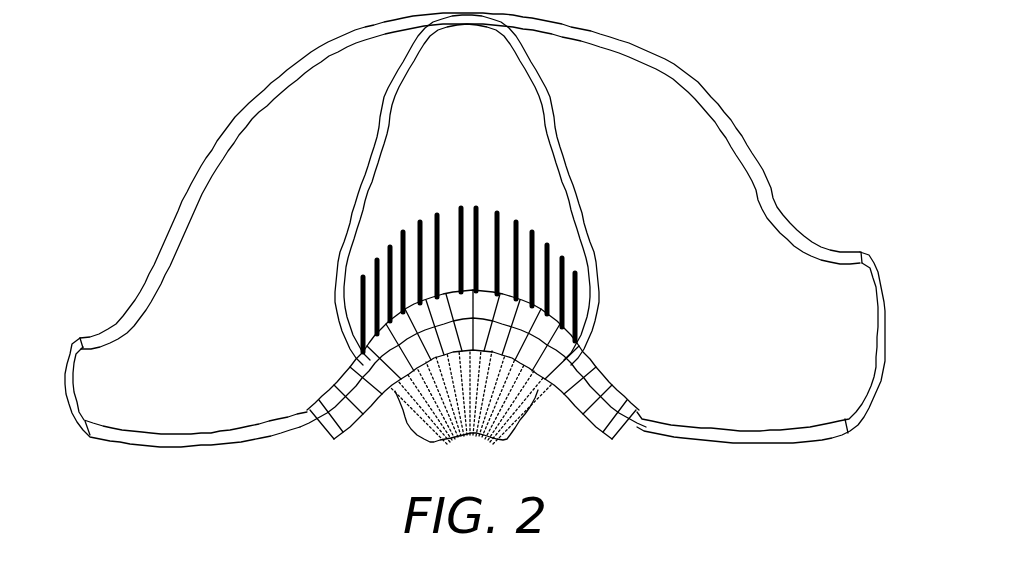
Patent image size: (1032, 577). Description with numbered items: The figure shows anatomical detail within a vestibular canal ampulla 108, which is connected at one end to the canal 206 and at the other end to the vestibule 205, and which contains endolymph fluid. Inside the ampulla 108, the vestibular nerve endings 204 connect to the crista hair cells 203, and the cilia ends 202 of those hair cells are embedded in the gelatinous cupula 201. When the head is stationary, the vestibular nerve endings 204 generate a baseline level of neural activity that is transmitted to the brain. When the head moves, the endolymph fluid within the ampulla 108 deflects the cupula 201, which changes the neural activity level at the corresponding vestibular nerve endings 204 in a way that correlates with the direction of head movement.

The vestibular canal ampulla 108 is at (696, 57).
The gelatinous cupula 201 is at (430, 92).
The cilia ends 202 is at (363, 278).
The crista hair cells 203 is at (576, 400).
The vestibular nerve endings 204 is at (411, 410).
The vestibule 205 is at (832, 249).
The canal 206 is at (106, 328).